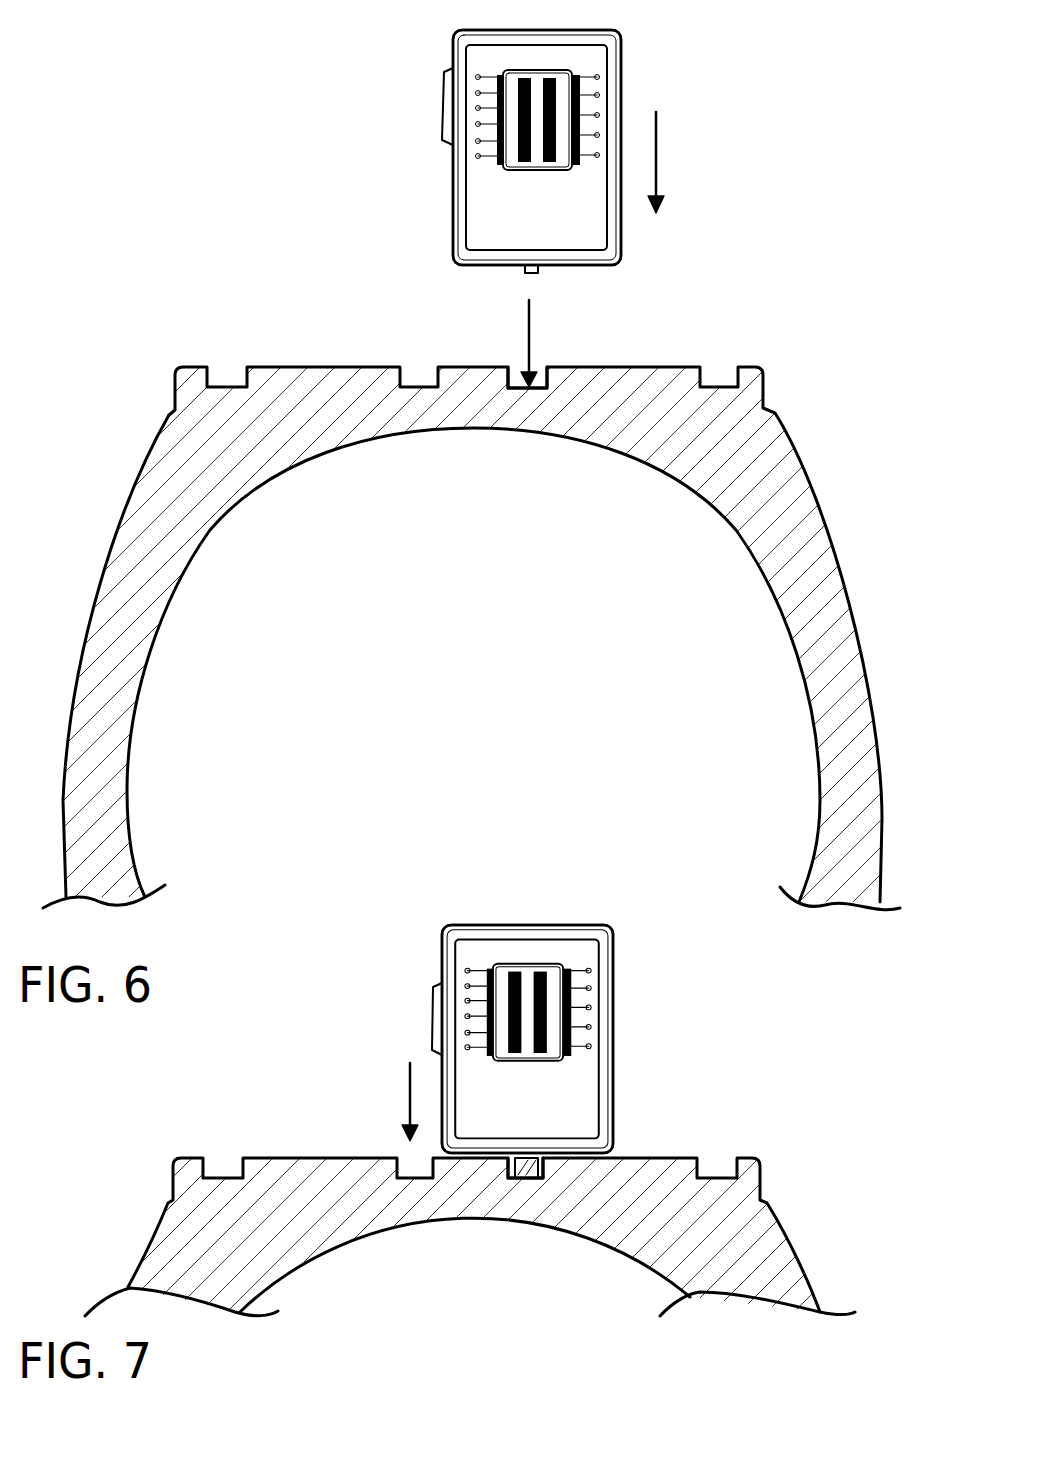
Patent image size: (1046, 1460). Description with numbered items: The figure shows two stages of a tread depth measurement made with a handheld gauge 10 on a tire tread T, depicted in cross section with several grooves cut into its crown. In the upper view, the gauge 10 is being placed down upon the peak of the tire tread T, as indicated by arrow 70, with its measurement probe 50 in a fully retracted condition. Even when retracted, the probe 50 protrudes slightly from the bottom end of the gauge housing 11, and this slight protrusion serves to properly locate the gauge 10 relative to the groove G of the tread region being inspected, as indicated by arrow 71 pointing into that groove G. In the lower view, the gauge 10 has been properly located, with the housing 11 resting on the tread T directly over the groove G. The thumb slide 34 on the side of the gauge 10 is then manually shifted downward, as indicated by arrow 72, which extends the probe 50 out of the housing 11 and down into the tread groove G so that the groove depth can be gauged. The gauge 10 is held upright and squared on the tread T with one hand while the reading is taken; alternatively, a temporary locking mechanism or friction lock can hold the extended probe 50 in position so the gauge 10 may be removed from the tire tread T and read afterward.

In FIG. 6, the handheld gauge 10 is at (402, 88).
In FIG. 7, the handheld gauge 10 is at (670, 1029).
In FIG. 6, the gauge housing 11 is at (453, 210).
In FIG. 7, the gauge housing 11 is at (613, 1085).
In FIG. 7, the thumb slide 34 is at (435, 1035).
In FIG. 6, the measurement probe 50 is at (527, 274).
In FIG. 7, the measurement probe 50 is at (509, 1180).
In FIG. 6, the arrow 70 is at (660, 153).
In FIG. 6, the arrow 71 is at (536, 326).
In FIG. 7, the arrow 72 is at (408, 1105).
In FIG. 6, the tire tread T is at (355, 370).
In FIG. 7, the tire tread T is at (320, 1165).
In FIG. 6, the groove G is at (510, 387).
In FIG. 7, the groove G is at (538, 1180).